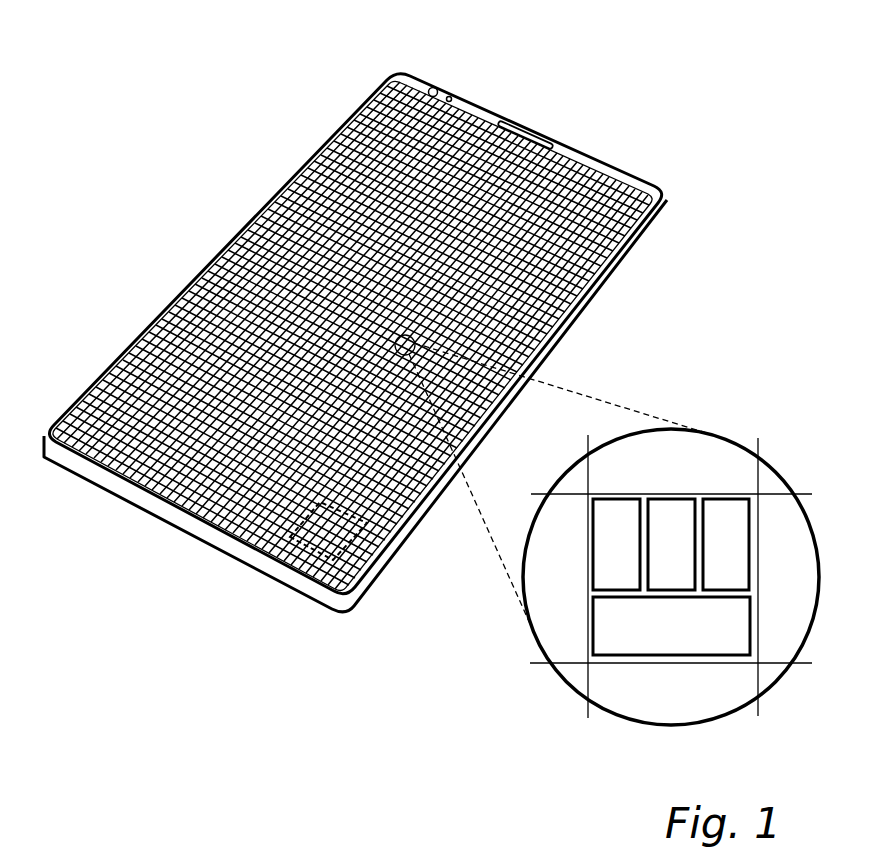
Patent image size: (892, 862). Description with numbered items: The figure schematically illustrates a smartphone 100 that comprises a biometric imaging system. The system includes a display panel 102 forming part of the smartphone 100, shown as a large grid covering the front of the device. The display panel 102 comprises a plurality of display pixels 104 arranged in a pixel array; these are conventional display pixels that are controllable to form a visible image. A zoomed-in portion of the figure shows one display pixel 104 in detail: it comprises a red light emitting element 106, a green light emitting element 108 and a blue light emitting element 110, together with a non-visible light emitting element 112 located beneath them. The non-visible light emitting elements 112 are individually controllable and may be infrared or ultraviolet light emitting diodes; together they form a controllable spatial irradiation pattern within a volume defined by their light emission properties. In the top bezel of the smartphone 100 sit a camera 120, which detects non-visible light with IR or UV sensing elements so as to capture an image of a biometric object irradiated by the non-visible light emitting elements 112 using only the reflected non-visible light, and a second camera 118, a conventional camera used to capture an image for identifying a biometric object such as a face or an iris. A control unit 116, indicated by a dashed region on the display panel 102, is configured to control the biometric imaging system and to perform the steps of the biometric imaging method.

The smartphone 100 is at (583, 84).
The display panel 102 is at (620, 205).
The display pixel 104 is at (750, 495).
The red light emitting element 106 is at (628, 532).
The green light emitting element 108 is at (670, 532).
The blue light emitting element 110 is at (724, 532).
The non-visible light emitting element 112 is at (645, 625).
The control unit 116 is at (357, 560).
The second camera 118 is at (453, 99).
The camera 120 is at (440, 89).